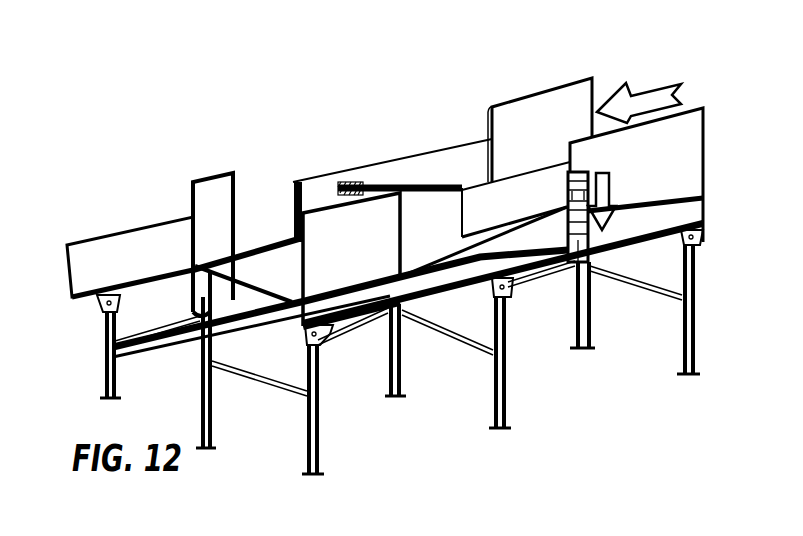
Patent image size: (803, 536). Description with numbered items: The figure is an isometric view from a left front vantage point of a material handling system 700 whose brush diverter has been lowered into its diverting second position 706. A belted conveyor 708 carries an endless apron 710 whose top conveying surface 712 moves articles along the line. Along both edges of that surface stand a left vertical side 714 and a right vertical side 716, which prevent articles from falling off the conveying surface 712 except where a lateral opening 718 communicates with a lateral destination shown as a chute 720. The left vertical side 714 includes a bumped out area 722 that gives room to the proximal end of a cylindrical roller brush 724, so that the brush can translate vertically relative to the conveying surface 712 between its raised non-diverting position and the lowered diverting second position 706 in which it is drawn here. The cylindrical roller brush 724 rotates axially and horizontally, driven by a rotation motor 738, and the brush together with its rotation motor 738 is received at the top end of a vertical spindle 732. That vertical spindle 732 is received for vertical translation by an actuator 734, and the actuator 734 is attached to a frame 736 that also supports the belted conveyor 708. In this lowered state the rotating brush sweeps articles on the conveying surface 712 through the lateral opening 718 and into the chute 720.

The material handling system 700 is at (163, 46).
The diverting second position 706 is at (365, 133).
The belted conveyor 708 is at (295, 232).
The endless apron 710 is at (295, 277).
The top conveying surface 712 is at (273, 272).
The left vertical side 714 is at (690, 110).
The right vertical side 716 is at (542, 92).
The lateral opening 718 is at (293, 233).
The chute 720 is at (157, 232).
The bumped out area 722 is at (422, 229).
The cylindrical roller brush 724 is at (548, 215).
The vertical spindle 732 is at (605, 246).
The actuator 734 is at (598, 258).
The frame 736 is at (352, 308).
The rotation motor 738 is at (582, 222).